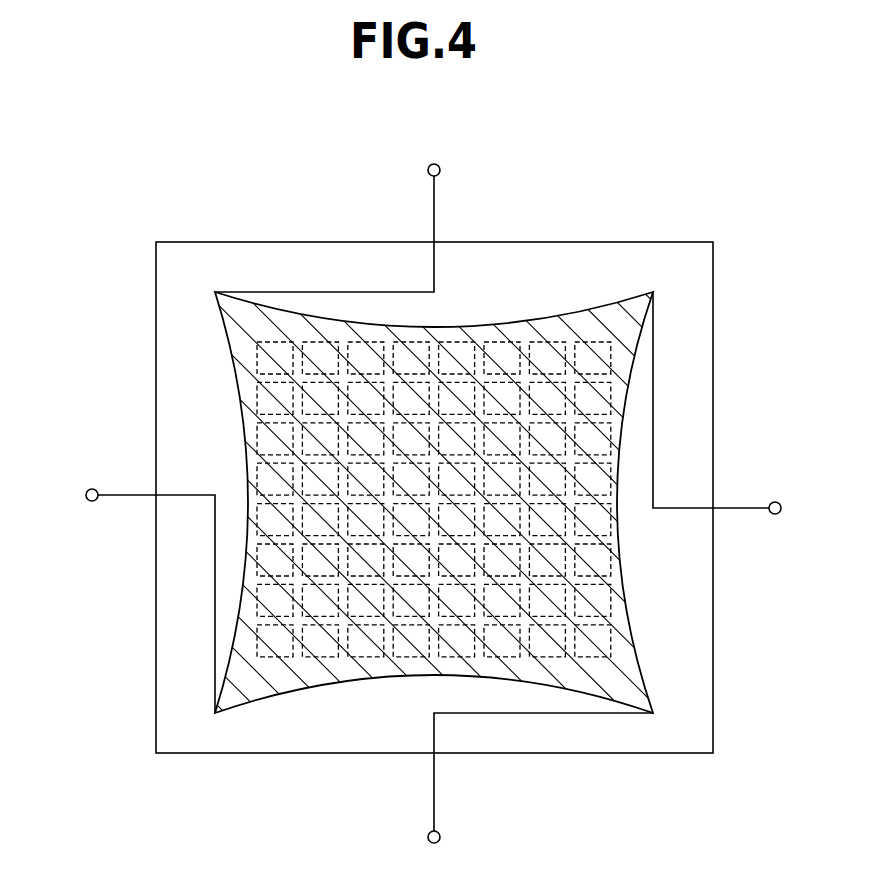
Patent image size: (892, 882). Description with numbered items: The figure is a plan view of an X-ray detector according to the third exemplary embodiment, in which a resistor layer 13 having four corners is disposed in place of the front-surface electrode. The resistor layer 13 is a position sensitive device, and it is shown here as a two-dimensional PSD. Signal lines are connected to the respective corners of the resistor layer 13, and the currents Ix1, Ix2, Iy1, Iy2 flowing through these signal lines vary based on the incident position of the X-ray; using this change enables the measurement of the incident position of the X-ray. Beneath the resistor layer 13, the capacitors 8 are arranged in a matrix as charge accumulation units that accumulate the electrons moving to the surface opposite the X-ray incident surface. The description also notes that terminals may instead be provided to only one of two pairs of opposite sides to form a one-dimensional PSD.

The resistor layer 13 is at (618, 320).
The capacitors 8 is at (603, 633).
The current Ix1 is at (131, 596).
The current Ix2 is at (736, 405).
The current Iy1 is at (521, 780).
The current Iy2 is at (327, 223).